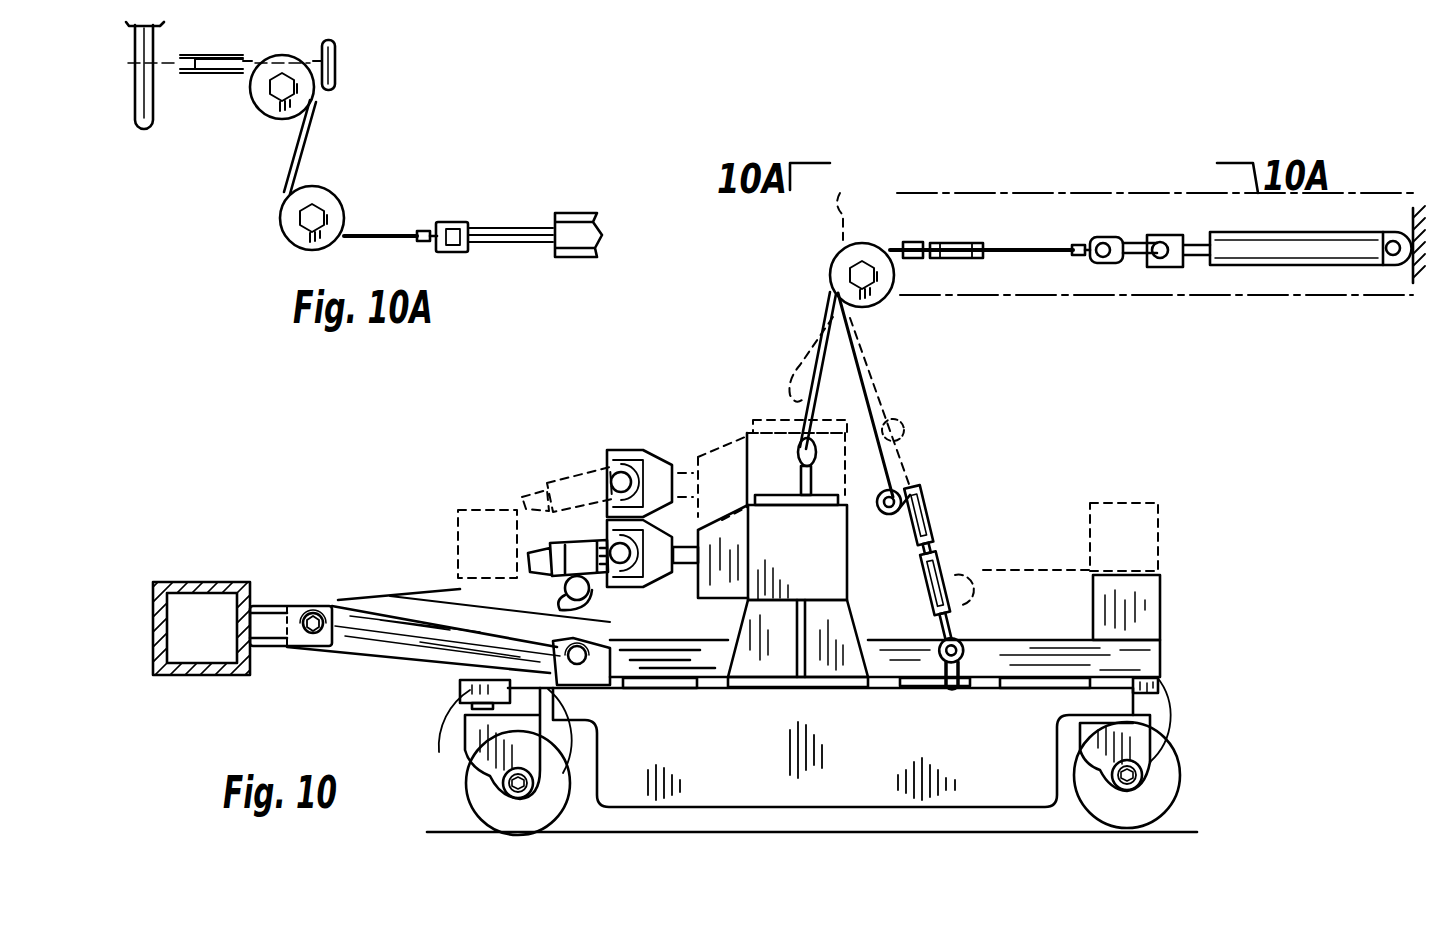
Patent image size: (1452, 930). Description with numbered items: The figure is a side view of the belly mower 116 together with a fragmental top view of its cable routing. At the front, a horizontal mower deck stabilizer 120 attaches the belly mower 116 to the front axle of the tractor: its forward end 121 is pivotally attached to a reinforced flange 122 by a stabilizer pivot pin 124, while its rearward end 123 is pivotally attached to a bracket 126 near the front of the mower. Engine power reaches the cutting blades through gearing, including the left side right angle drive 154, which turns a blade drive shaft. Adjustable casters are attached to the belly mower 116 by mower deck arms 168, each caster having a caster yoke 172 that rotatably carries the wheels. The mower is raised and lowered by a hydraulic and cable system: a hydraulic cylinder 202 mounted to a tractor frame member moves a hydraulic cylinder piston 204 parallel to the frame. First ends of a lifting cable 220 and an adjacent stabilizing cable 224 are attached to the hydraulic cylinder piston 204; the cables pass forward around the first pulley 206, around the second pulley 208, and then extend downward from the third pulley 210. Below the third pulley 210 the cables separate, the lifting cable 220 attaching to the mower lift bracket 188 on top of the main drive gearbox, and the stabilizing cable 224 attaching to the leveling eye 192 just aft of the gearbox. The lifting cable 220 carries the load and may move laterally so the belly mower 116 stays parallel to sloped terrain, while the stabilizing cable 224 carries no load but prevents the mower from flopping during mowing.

In FIG. 10, the belly mower 116 is at (1212, 458).
In FIG. 10, the mower deck stabilizer 120 is at (422, 622).
In FIG. 10, the forward end 121 is at (347, 627).
In FIG. 10, the reinforced flange 122 is at (282, 617).
In FIG. 10, the rearward end 123 is at (540, 650).
In FIG. 10, the stabilizer pivot pin 124 is at (315, 614).
In FIG. 10, the bracket 126 is at (653, 652).
In FIG. 10, the left side right angle drive 154 is at (797, 552).
In FIG. 10, the mower deck arm 168 is at (1040, 637).
In FIG. 10, the caster yoke 172 is at (468, 740).
In FIG. 10, the mower lift bracket 188 is at (787, 483).
In FIG. 10, the leveling eye 192 is at (967, 655).
In FIG. 10A, the hydraulic cylinder 202 is at (575, 215).
In FIG. 10, the hydraulic cylinder 202 is at (1270, 232).
In FIG. 10A, the hydraulic cylinder piston 204 is at (503, 232).
In FIG. 10, the hydraulic cylinder piston 204 is at (1140, 240).
In FIG. 10A, the first pulley 206 is at (285, 214).
In FIG. 10, the first pulley 206 is at (950, 243).
In FIG. 10A, the second pulley 208 is at (317, 98).
In FIG. 10, the second pulley 208 is at (908, 242).
In FIG. 10A, the third pulley 210 is at (210, 75).
In FIG. 10, the third pulley 210 is at (830, 272).
In FIG. 10A, the lifting cable 220 is at (253, 55).
In FIG. 10, the lifting cable 220 is at (807, 353).
In FIG. 10, the stabilizing cable 224 is at (850, 334).